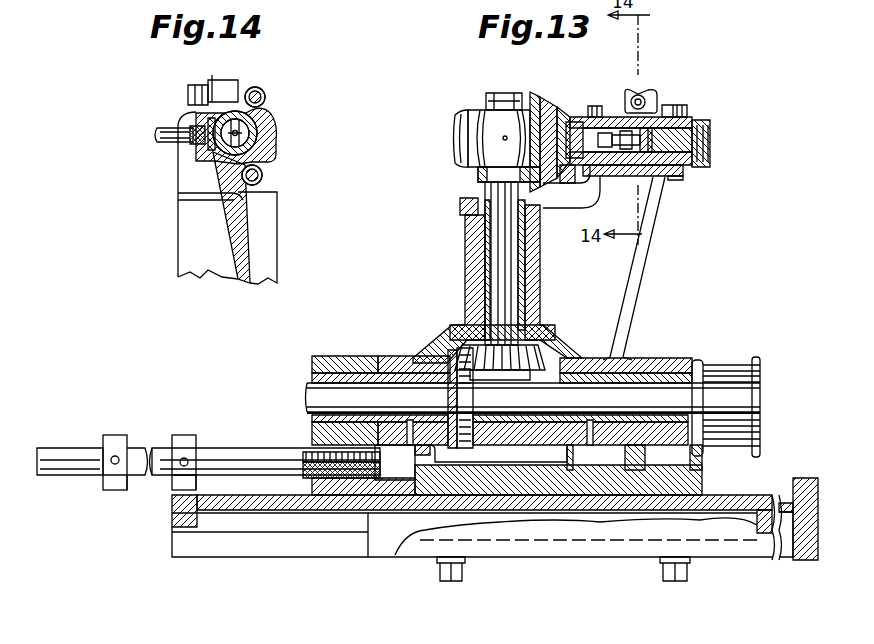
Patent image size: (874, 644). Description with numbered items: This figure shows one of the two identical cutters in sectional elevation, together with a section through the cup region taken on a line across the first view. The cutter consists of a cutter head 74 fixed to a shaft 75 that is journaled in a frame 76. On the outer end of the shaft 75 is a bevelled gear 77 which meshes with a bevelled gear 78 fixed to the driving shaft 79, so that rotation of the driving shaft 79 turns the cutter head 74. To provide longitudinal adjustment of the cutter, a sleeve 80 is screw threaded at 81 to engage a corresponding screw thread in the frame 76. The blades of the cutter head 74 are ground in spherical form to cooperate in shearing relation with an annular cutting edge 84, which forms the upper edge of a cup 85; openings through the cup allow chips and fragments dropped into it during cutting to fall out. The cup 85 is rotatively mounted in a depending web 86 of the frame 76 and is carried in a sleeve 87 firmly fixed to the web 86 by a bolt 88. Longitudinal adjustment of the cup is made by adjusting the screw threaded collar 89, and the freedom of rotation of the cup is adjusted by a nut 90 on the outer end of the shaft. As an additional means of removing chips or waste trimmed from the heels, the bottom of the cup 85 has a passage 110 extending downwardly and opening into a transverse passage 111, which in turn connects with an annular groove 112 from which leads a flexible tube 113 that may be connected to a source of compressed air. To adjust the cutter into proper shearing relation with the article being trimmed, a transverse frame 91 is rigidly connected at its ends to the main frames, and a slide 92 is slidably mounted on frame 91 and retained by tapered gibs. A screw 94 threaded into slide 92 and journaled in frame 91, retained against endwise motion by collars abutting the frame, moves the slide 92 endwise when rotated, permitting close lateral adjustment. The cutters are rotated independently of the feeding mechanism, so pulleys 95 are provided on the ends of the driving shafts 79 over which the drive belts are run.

In FIG. 13, the cutter head 74 is at (455, 128).
In FIG. 13, the shaft 75 is at (500, 244).
In FIG. 13, the frame 76 is at (466, 295).
In FIG. 13, the bevelled gear 77 is at (540, 355).
In FIG. 13, the bevelled gear 78 is at (453, 388).
In FIG. 13, the driving shaft 79 is at (512, 400).
In FIG. 13, the sleeve 80 is at (482, 196).
In FIG. 13, the screw thread 81 is at (460, 216).
In FIG. 13, the annular cutting edge 84 is at (531, 95).
In FIG. 13, the cup 85 is at (569, 120).
In FIG. 14, the depending web 86 is at (250, 252).
In FIG. 13, the depending web 86 is at (628, 272).
In FIG. 13, the sleeve 87 is at (592, 106).
In FIG. 14, the bolt 88 is at (190, 97).
In FIG. 13, the bolt 88 is at (646, 100).
In FIG. 13, the screw threaded collar 89 is at (572, 170).
In FIG. 13, the nut 90 is at (710, 126).
In FIG. 13, the transverse frame 91 is at (185, 510).
In FIG. 13, the slide 92 is at (330, 450).
In FIG. 13, the screw 94 is at (242, 460).
In FIG. 13, the pulleys 95 is at (728, 376).
In FIG. 13, the passage 110 is at (643, 198).
In FIG. 14, the transverse passage 111 is at (250, 128).
In FIG. 13, the transverse passage 111 is at (648, 150).
In FIG. 14, the annular groove 112 is at (217, 148).
In FIG. 13, the annular groove 112 is at (642, 160).
In FIG. 14, the flexible tube 113 is at (163, 128).